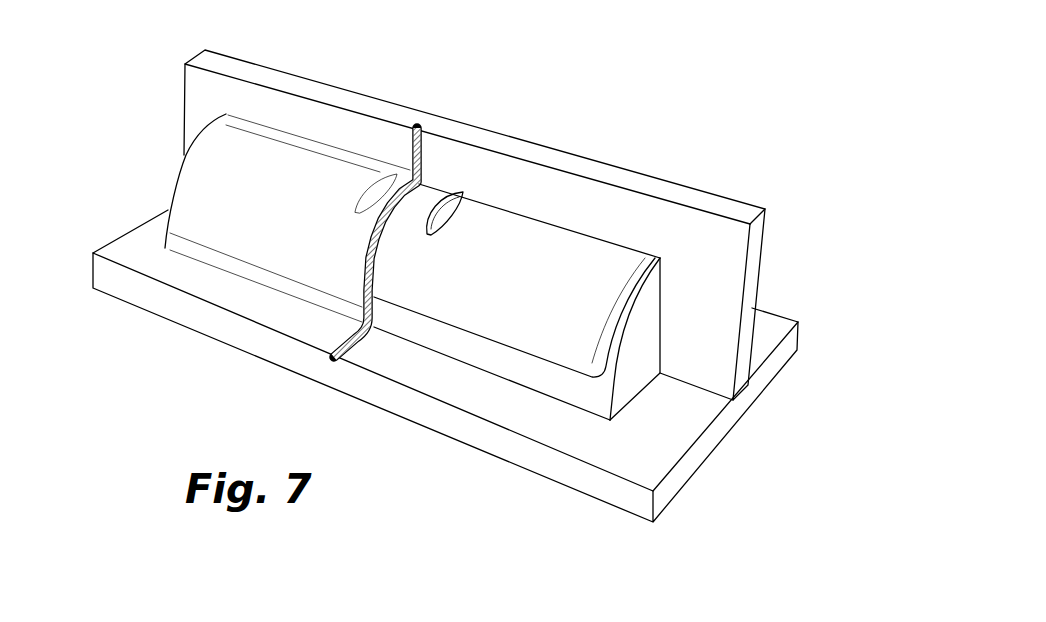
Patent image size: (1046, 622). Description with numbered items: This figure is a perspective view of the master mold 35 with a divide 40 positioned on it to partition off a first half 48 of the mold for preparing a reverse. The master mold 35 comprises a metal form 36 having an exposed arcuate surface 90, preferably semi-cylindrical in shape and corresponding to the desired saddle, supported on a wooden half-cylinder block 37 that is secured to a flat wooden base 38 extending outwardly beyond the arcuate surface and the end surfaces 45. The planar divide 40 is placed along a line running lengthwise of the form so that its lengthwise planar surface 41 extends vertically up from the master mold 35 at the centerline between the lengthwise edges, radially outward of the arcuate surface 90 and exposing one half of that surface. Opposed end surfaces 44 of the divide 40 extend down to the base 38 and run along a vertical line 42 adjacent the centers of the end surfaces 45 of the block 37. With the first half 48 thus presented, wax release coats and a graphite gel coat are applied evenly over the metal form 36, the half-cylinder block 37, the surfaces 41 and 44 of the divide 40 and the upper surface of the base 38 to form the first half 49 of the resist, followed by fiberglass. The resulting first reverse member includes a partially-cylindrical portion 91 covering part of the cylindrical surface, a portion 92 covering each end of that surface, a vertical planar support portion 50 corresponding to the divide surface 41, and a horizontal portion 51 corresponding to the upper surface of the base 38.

The master mold 35 is at (228, 382).
The metal form 36 is at (541, 332).
The wooden half-cylinder block 37 is at (532, 372).
The base 38 is at (446, 395).
The divide 40 is at (523, 225).
The lengthwise planar surface 41 is at (516, 175).
The vertical line 42 is at (664, 336).
The end surfaces of divide 44 is at (723, 282).
The end surfaces 45 is at (637, 368).
The first half 48 is at (690, 408).
The first half of the resist 49 is at (285, 190).
The first planar support portion 50 is at (366, 140).
The horizontal portion 51 is at (197, 278).
The arcuate surface 90 is at (583, 265).
The partially-cylindrical portion 91 is at (281, 168).
The end-covering portion 92 is at (231, 185).